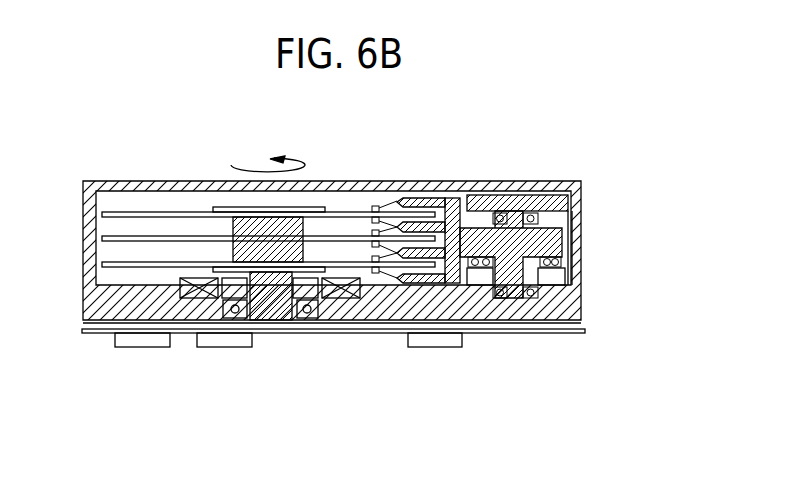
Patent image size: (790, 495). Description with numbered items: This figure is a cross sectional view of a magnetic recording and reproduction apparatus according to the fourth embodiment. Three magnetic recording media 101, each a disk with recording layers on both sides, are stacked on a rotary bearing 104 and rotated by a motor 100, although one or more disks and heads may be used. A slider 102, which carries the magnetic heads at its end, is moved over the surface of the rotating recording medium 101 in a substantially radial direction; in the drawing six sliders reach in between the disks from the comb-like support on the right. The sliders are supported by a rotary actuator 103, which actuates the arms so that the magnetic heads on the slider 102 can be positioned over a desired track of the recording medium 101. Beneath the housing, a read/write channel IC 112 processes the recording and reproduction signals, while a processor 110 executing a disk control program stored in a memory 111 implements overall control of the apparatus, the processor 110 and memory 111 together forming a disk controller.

The motor 100 is at (322, 302).
The magnetic recording medium 101 is at (117, 212).
The slider 102 is at (373, 206).
The rotary actuator 103 is at (564, 237).
The rotary bearing 104 is at (276, 303).
The processor 110 is at (145, 347).
The memory 111 is at (225, 347).
The read/write channel IC 112 is at (442, 348).